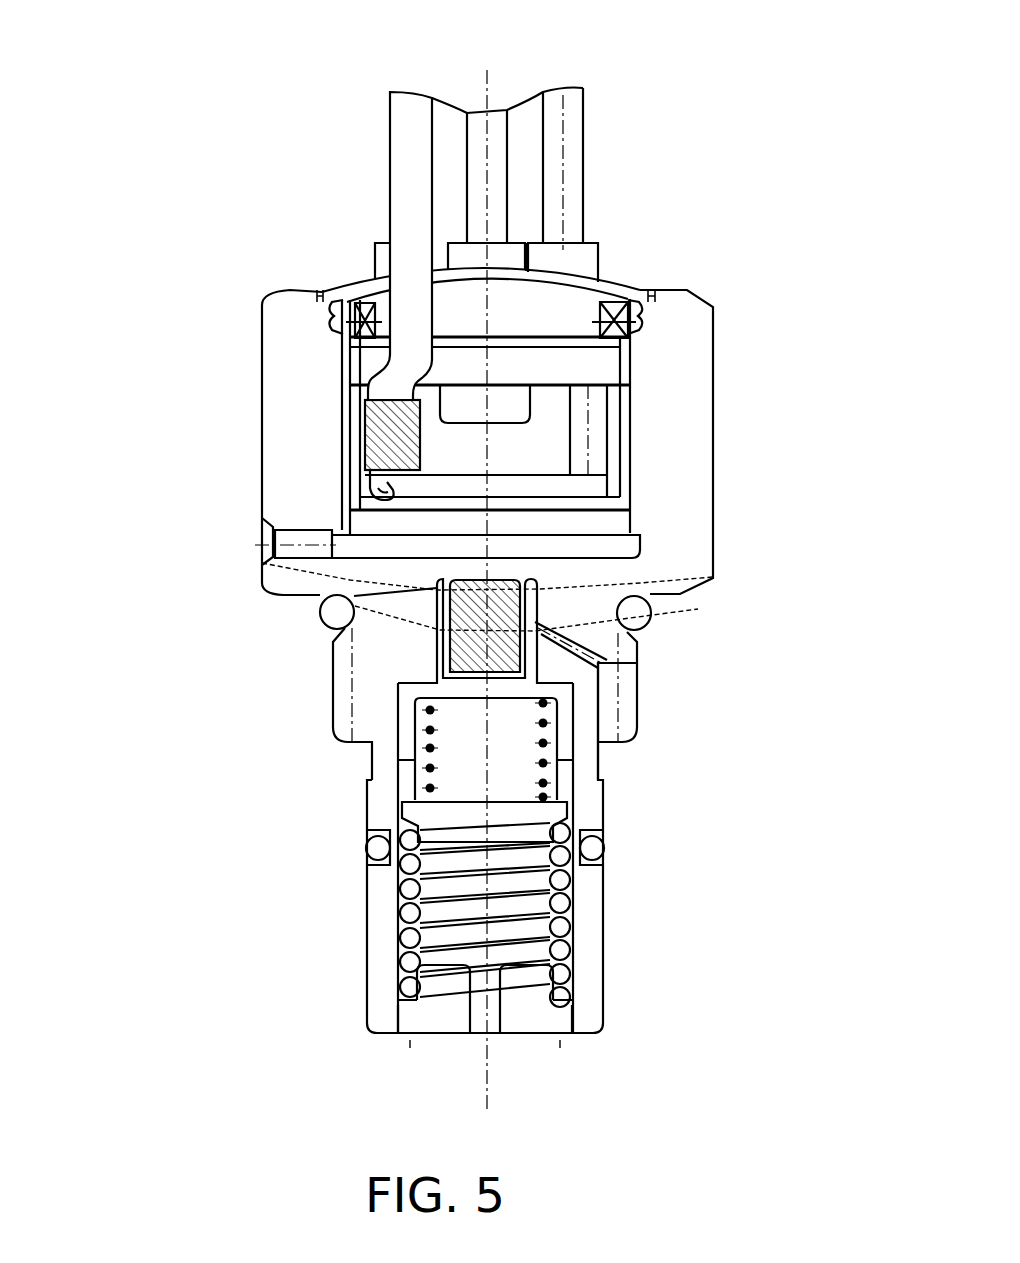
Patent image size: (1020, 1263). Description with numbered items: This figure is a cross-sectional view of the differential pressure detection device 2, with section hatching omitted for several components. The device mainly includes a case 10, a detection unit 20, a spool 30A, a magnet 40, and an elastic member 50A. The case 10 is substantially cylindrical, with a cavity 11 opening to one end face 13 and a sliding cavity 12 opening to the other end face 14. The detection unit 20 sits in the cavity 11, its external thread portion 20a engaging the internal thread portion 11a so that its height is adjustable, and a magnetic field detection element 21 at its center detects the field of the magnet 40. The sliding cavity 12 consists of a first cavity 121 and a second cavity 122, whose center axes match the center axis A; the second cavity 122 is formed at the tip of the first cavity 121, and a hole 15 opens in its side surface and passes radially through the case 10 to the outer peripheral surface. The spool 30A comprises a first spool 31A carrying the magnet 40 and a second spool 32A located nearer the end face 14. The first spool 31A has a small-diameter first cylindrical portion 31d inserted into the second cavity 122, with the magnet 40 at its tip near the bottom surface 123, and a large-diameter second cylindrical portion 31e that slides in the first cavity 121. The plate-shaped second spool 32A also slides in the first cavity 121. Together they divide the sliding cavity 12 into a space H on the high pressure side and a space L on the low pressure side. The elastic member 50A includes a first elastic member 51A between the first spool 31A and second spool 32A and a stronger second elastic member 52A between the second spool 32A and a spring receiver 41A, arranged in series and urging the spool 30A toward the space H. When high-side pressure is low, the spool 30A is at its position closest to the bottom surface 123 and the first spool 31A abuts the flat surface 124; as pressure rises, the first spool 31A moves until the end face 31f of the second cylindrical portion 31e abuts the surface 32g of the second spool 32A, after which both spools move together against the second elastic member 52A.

The differential pressure detection device 2 is at (736, 36).
The center axis A is at (503, 88).
The case 10 is at (720, 366).
The cavity 11 is at (332, 527).
The internal thread portion 11a is at (368, 370).
The sliding cavity 12 is at (718, 686).
The first cavity 121 is at (593, 758).
The second cavity 122 is at (575, 678).
The bottom surface 123 is at (713, 577).
The flat surface 124 is at (550, 613).
The end face 13 is at (650, 286).
The other end face 14 is at (590, 1040).
The hole 15 is at (610, 650).
The detection unit 20 is at (597, 171).
The external thread portion 20a is at (365, 412).
The magnetic field detection element 21 is at (378, 492).
The spool 30A is at (308, 858).
The first spool 31A is at (346, 858).
The first cylindrical portion 31d is at (415, 699).
The second cylindrical portion 31e is at (398, 758).
The end face 31f is at (415, 772).
The second spool 32A is at (346, 917).
The surface 32g is at (402, 812).
The magnet 40 is at (322, 608).
The spring receiver 41A is at (398, 1023).
The elastic member 50A is at (594, 853).
The first elastic member 51A is at (575, 790).
The second elastic member 52A is at (570, 890).
The space in high pressure side H is at (262, 563).
The space in low pressure side L is at (458, 947).